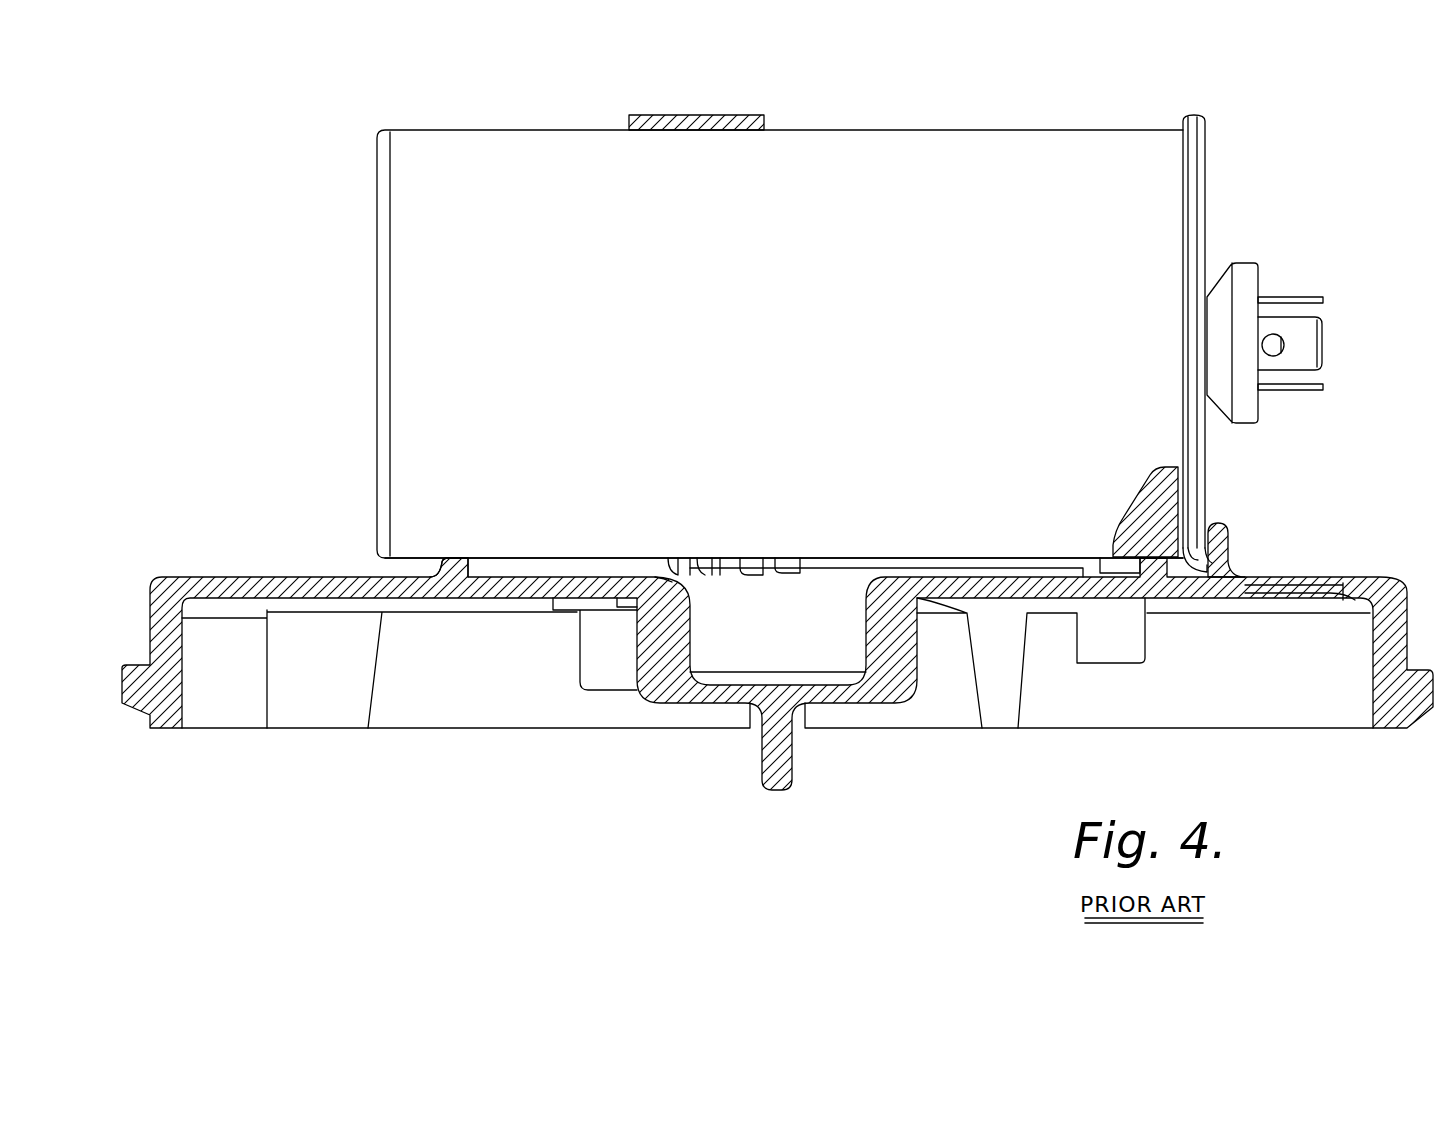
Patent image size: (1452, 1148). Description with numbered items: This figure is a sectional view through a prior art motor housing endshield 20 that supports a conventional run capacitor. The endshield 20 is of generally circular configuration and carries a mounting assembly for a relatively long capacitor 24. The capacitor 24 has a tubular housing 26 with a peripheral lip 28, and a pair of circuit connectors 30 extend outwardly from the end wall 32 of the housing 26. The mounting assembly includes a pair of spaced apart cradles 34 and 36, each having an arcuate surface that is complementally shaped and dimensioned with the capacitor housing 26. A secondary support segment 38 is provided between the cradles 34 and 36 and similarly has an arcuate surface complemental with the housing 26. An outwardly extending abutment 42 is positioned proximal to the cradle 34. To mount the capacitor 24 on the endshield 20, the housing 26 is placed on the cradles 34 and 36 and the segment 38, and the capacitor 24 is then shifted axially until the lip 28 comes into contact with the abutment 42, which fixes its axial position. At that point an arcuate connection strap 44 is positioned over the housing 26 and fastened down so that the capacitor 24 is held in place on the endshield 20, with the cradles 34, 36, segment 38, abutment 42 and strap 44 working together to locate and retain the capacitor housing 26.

The motor housing endshield 20 is at (712, 758).
The capacitor 24 is at (549, 105).
The tubular housing 26 is at (733, 327).
The peripheral lip 28 is at (1198, 125).
The circuit connectors 30 is at (1348, 296).
The end wall 32 is at (1180, 495).
The cradle 34 is at (1158, 565).
The cradle 36 is at (455, 574).
The secondary support segment 38 is at (696, 560).
The abutment 42 is at (1226, 531).
The connection strap 44 is at (735, 122).